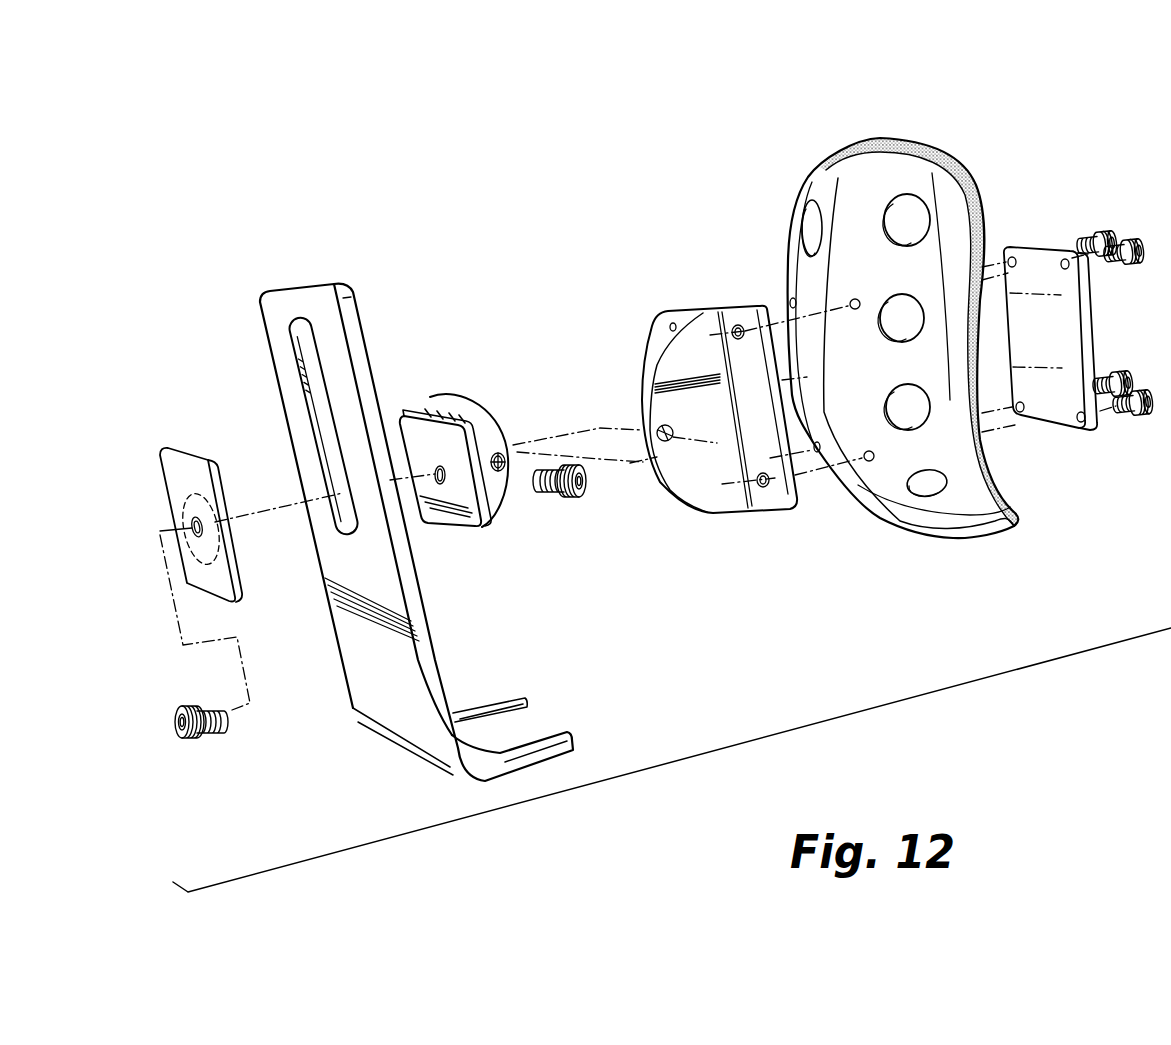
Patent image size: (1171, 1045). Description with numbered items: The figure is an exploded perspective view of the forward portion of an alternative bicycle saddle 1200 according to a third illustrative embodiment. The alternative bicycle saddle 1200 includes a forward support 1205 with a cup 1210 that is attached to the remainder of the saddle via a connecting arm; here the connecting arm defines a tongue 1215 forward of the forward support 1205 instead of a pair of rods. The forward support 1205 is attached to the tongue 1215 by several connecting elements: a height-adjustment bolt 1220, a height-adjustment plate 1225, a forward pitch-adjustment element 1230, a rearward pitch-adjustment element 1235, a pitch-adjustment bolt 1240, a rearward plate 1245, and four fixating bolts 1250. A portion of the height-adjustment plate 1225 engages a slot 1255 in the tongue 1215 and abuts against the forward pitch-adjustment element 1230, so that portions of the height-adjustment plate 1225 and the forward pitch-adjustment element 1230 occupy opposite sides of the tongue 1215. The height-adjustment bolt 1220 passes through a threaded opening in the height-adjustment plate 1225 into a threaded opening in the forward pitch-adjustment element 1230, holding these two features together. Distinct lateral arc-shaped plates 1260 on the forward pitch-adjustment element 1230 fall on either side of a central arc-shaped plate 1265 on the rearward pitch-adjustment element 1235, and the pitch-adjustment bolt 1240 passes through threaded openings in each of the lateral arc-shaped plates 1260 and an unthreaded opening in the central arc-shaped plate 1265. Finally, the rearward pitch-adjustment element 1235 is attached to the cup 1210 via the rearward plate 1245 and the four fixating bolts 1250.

The alternative bicycle saddle 1200 is at (980, 148).
The forward support 1205 is at (587, 305).
The cup 1210 is at (898, 517).
The tongue 1215 is at (249, 350).
The height-adjustment bolt 1220 is at (212, 733).
The height-adjustment plate 1225 is at (237, 557).
The forward pitch-adjustment element 1230 is at (458, 543).
The rearward pitch-adjustment element 1235 is at (688, 289).
The pitch-adjustment bolt 1240 is at (562, 500).
The rearward plate 1245 is at (1067, 422).
The fixating bolts 1250 is at (1127, 416).
The slot 1255 is at (326, 471).
The lateral arc-shaped plates 1260 is at (433, 403).
The central arc-shaped plate 1265 is at (698, 493).